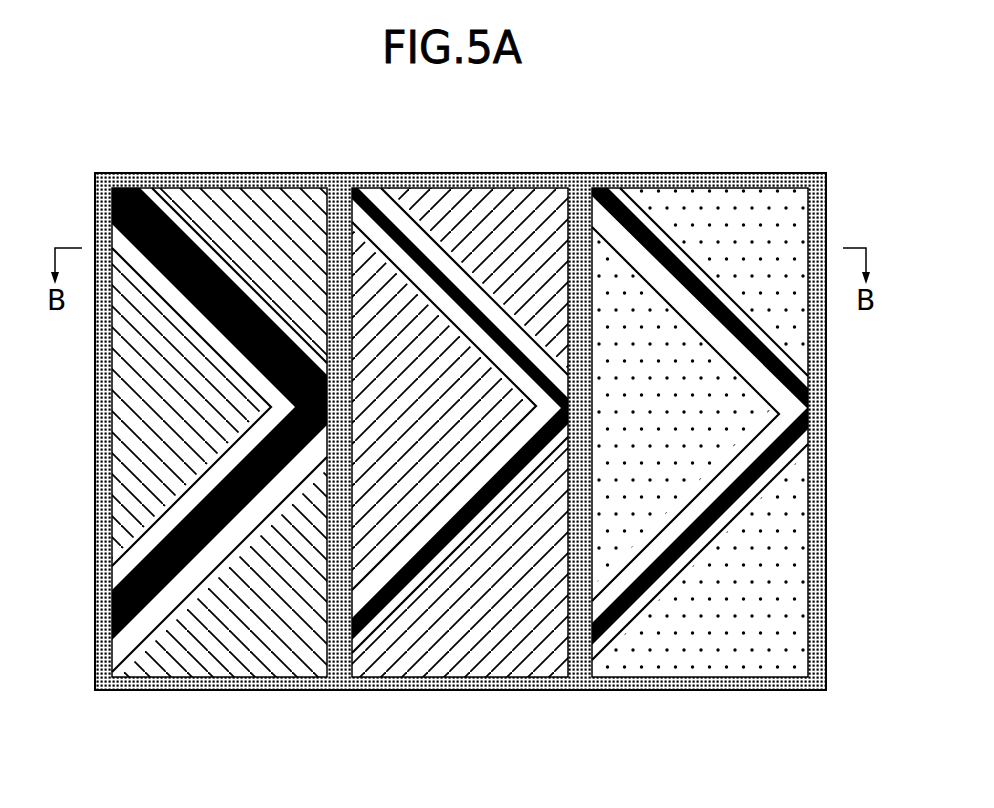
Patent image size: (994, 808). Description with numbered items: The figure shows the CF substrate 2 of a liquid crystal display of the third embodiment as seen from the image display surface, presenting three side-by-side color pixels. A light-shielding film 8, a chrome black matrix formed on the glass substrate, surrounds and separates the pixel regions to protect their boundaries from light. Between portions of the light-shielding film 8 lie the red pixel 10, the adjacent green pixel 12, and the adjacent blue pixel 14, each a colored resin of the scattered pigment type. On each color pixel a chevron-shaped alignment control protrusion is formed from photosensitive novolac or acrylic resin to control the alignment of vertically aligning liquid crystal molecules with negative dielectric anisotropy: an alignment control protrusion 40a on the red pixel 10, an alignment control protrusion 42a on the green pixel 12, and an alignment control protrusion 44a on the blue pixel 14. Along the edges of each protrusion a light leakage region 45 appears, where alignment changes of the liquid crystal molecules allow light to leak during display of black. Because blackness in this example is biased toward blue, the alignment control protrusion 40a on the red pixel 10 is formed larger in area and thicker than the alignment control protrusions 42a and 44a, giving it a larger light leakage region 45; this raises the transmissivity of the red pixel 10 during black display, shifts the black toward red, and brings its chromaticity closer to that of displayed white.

The CF substrate 2 is at (90, 407).
The light-shielding film 8 is at (822, 548).
The red pixel 10 is at (181, 386).
The green pixel 12 is at (460, 423).
The blue pixel 14 is at (700, 425).
The alignment control protrusion 40a is at (130, 604).
The alignment control protrusion 42a is at (378, 606).
The alignment control protrusion 44a is at (634, 614).
The light leakage region 45 is at (363, 233).